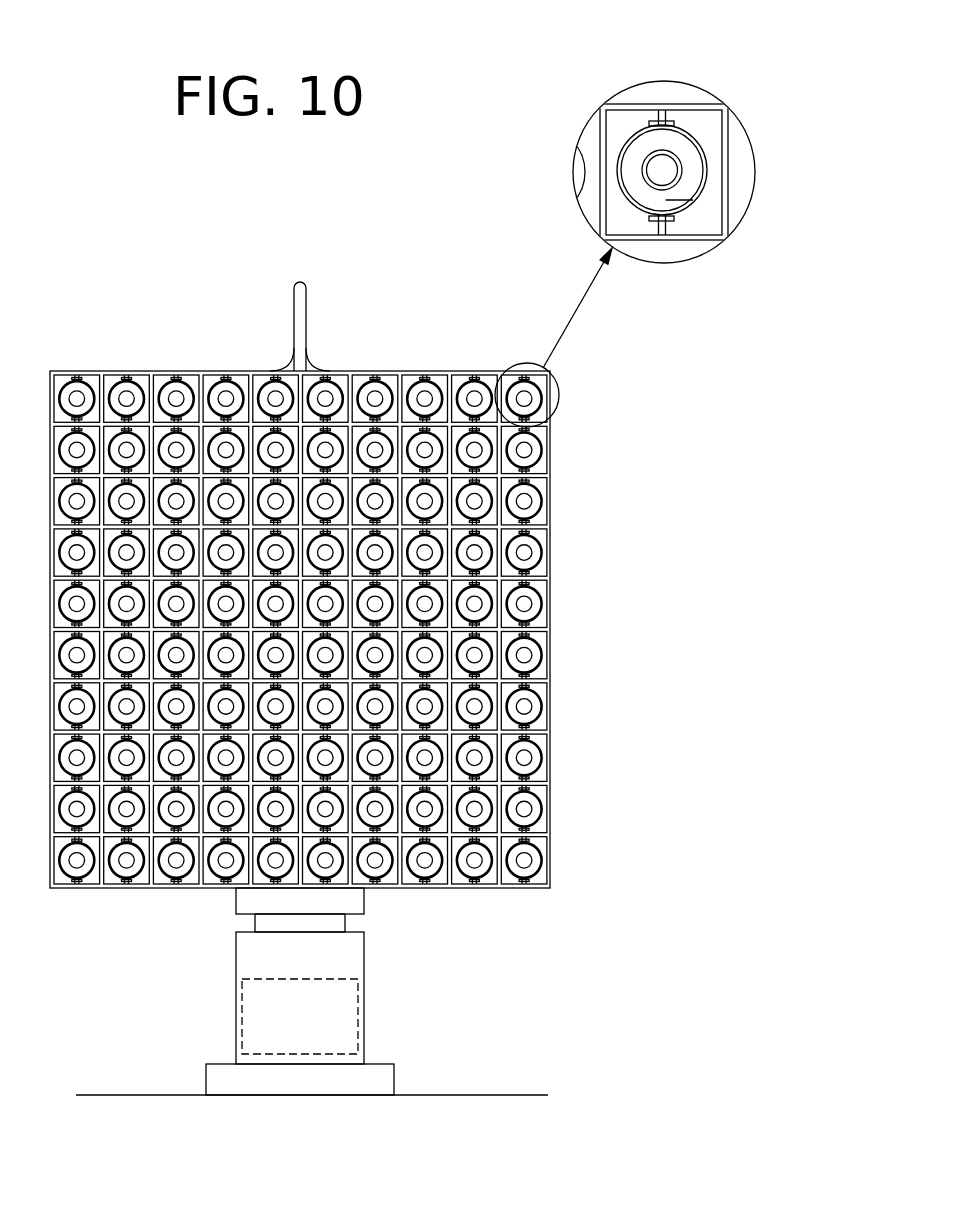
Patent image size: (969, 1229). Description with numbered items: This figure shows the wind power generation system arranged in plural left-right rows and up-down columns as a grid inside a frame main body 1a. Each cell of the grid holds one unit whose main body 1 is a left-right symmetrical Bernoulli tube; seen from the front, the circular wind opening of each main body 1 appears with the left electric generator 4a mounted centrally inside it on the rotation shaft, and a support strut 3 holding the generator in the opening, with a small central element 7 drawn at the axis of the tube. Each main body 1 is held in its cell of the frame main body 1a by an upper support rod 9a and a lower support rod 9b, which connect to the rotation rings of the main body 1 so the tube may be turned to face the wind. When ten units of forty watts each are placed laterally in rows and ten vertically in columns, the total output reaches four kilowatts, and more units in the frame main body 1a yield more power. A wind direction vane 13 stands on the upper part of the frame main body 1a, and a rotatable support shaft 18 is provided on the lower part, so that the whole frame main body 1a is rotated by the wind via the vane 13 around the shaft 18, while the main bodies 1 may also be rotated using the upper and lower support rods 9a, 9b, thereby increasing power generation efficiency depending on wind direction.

The frame main body 1a is at (550, 617).
The wind direction vane 13 is at (298, 310).
The rotatable support shaft 18 is at (337, 923).
The main body 1 is at (700, 140).
The left electric generator 4a is at (698, 150).
The light emitting element 7 is at (668, 170).
The support member 3 is at (693, 200).
The upper support rod 9a is at (662, 120).
The lower support rod 9b is at (667, 228).